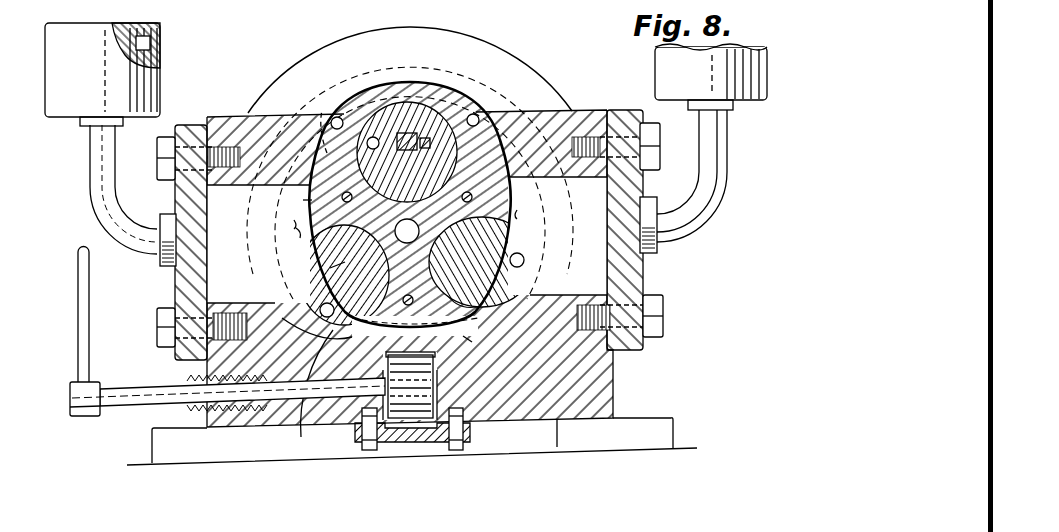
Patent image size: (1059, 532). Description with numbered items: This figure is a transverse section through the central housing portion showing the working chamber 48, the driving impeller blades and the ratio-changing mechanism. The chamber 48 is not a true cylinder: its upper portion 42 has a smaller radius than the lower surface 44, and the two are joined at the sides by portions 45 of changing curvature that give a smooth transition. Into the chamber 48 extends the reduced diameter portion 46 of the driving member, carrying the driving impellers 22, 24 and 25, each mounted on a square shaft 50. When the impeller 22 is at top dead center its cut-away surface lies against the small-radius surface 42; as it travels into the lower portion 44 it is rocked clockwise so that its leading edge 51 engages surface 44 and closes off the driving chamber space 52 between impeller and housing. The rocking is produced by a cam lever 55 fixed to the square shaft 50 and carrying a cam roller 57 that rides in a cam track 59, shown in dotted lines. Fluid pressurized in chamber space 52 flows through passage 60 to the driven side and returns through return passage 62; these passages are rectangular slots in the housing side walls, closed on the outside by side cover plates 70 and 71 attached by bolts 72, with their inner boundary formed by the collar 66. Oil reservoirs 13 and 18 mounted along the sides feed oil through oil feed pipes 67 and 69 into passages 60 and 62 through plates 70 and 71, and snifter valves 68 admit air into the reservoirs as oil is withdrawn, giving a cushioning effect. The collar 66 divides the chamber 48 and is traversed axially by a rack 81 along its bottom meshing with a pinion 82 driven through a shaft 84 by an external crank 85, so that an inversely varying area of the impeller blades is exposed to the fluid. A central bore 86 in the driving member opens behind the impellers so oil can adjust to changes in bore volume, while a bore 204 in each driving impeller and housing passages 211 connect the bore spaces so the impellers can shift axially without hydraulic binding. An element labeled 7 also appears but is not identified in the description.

The housing 7 is at (447, 42).
The oil reservoir 13 is at (60, 70).
The oil reservoir 18 is at (660, 76).
The impeller blade 22 is at (398, 184).
The driving impeller 24 is at (455, 255).
The driving impeller 25 is at (357, 279).
The upper portion 42 is at (327, 153).
The lower surface 44 is at (317, 391).
The portions of changing curvature 45 is at (294, 220).
The reduced diameter portion 46 is at (303, 200).
The chamber 48 is at (296, 228).
The square shaft 50 is at (502, 238).
The leading edge 51 is at (282, 318).
The driving chamber space 52 is at (415, 330).
The cam lever 55 is at (442, 114).
The cam roller 57 is at (474, 108).
The cam track 59 is at (555, 285).
The passage 60 is at (578, 251).
The return passage 62 is at (215, 262).
The collar 66 is at (470, 326).
The oil feed pipe 67 is at (96, 184).
The snifter valve 68 is at (160, 40).
The oil feed pipe 69 is at (717, 157).
The side cover plate 70 is at (186, 285).
The side cover plate 71 is at (632, 274).
The bolts 72 is at (173, 325).
The rack 81 is at (457, 335).
The pinion 82 is at (414, 420).
The shaft 84 is at (122, 398).
The external crank 85 is at (79, 288).
The central bore 86 is at (413, 227).
The bore 204 is at (376, 138).
The housing passages 211 is at (333, 117).